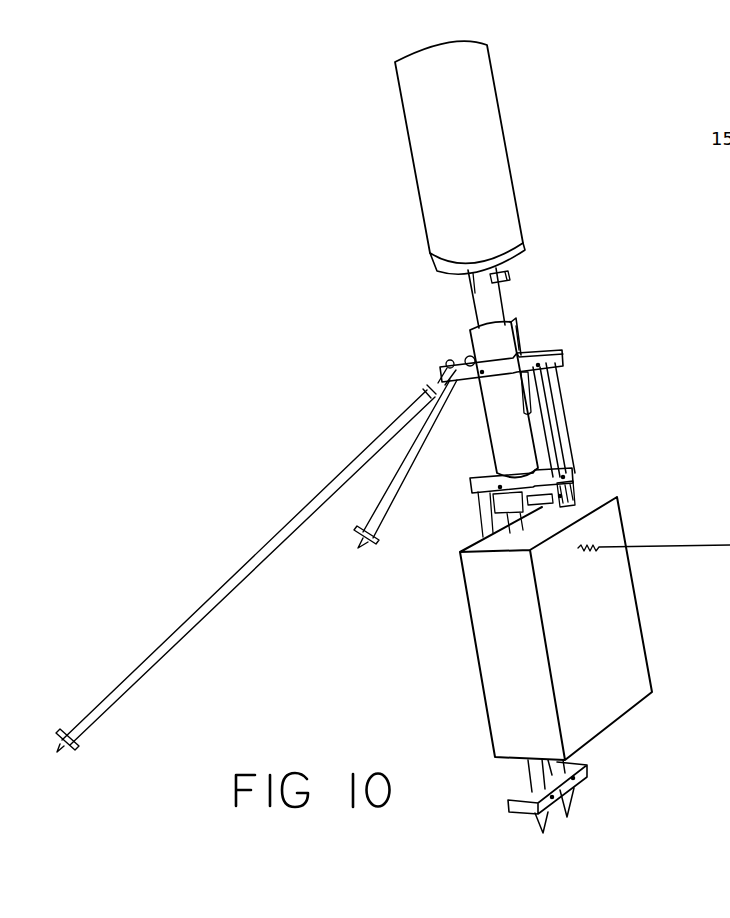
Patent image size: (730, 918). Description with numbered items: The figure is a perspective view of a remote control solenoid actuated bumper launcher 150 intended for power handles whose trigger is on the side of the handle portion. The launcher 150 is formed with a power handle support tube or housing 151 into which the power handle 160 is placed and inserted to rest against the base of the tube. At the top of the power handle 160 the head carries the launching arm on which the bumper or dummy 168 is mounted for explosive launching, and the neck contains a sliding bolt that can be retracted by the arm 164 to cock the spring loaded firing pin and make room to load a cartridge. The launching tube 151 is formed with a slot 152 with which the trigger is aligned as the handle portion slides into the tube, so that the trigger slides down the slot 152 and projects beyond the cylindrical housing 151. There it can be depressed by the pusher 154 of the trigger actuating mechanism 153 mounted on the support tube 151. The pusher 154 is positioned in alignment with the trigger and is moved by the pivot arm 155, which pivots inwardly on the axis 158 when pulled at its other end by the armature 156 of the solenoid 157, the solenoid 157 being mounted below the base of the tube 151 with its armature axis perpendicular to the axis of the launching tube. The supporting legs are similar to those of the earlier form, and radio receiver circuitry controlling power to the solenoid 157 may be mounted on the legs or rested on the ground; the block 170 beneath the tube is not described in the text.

The launcher 150 is at (345, 373).
The power handle support tube 151 is at (490, 445).
The slot 152 is at (518, 327).
The trigger actuating mechanism 153 is at (595, 347).
The pusher 154 is at (538, 392).
The pivot arm 155 is at (563, 445).
The armature 156 is at (550, 500).
The solenoid 157 is at (503, 502).
The axis 158 is at (552, 370).
The power handle 160 is at (427, 243).
The arm 164 is at (513, 273).
The bumper 168 is at (490, 73).
The base block 170 is at (647, 660).